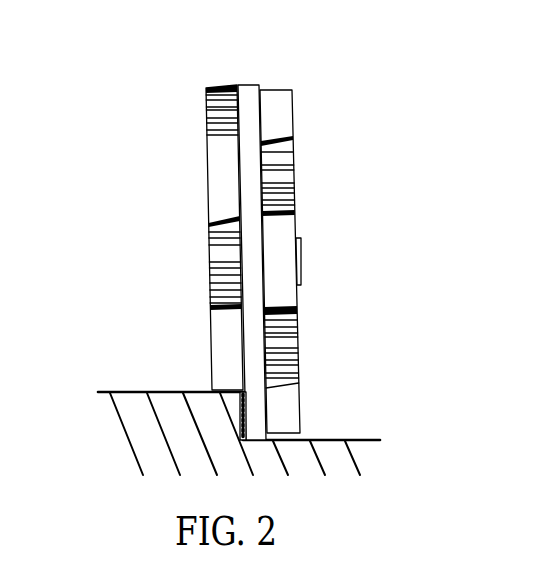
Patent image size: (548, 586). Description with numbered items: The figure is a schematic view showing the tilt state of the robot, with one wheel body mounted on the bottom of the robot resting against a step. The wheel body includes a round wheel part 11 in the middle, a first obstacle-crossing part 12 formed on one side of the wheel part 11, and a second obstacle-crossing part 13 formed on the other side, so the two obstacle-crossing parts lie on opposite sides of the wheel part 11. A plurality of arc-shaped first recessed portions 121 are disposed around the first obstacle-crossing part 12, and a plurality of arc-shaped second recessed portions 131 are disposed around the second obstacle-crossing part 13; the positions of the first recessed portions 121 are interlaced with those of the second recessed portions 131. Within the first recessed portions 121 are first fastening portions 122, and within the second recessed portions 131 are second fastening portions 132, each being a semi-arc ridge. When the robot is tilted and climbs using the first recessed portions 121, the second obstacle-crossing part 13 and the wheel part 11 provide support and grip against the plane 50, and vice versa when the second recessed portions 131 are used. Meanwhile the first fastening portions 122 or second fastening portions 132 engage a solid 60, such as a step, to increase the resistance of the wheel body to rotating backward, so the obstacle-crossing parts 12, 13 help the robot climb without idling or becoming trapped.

The wheel part 11 is at (247, 86).
The first obstacle-crossing part 12 is at (188, 222).
The first recessed portion 121 is at (206, 99).
The first fastening portion 122 is at (210, 262).
The second obstacle-crossing part 13 is at (313, 261).
The second recessed portion 131 is at (287, 160).
The second fastening portion 132 is at (293, 184).
The plane 50 is at (365, 440).
The solid 60 is at (132, 392).